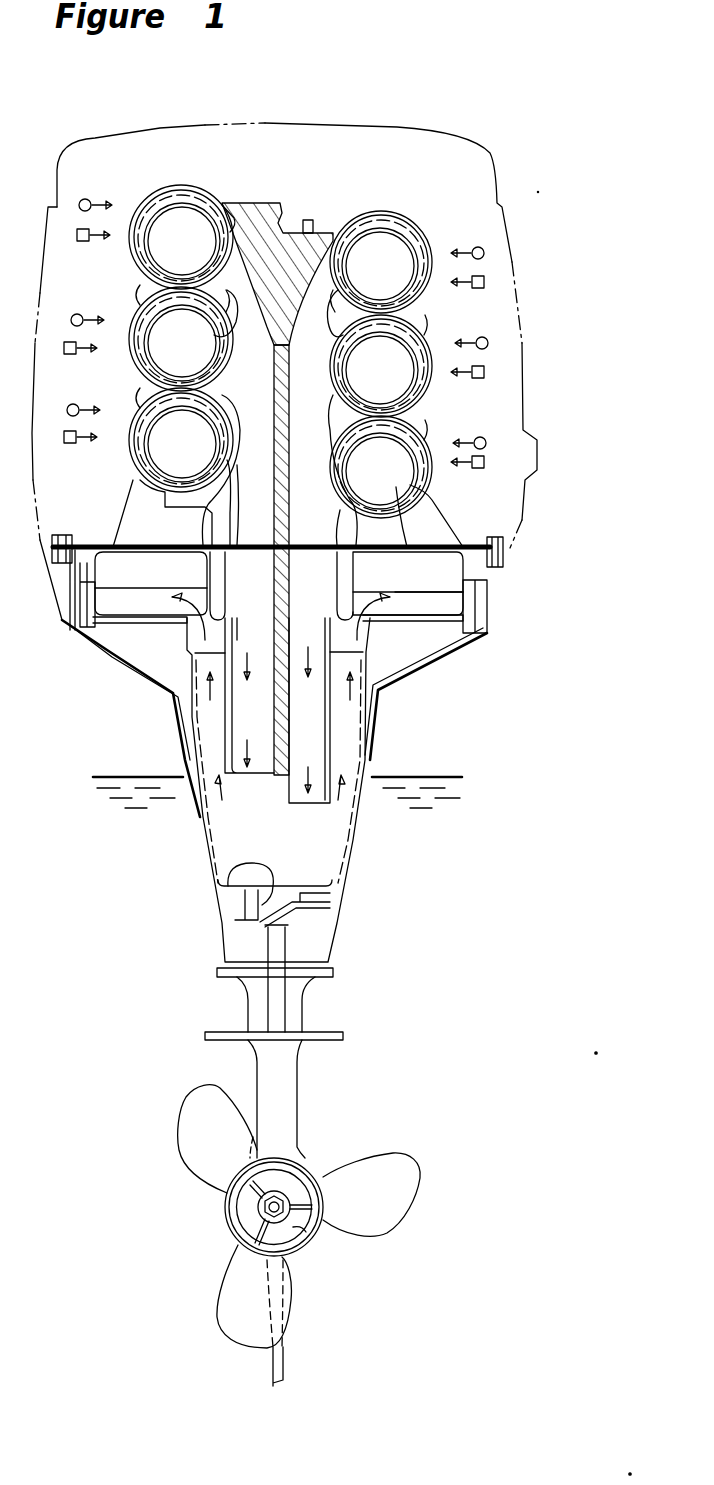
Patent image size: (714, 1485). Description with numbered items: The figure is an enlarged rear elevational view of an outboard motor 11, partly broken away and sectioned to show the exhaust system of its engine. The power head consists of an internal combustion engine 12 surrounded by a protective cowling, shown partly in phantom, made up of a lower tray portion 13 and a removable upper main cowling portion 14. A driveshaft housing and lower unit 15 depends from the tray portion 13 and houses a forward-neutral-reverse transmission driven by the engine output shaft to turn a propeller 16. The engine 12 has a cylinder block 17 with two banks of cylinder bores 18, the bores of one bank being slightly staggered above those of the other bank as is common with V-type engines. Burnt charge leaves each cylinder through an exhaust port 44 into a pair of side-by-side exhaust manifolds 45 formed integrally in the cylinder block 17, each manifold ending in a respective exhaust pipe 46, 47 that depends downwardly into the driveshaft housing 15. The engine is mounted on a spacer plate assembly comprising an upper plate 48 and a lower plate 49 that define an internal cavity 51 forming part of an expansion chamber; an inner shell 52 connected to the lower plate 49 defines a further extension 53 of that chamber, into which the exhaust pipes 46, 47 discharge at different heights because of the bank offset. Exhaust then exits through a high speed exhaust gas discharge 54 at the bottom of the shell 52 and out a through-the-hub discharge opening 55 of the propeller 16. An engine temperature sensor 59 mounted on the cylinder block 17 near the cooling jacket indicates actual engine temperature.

The outboard motor 11 is at (547, 195).
The internal combustion engine 12 is at (357, 140).
The lower tray portion 13 is at (527, 500).
The upper main cowling portion 14 is at (527, 345).
The driveshaft housing and lower unit 15 is at (353, 902).
The propeller 16 is at (306, 1235).
The cylinder block 17 is at (242, 190).
The cylinder bores 18 is at (393, 222).
The exhaust ports 44 is at (215, 239).
The exhaust manifolds 45 is at (222, 320).
The exhaust pipe 46 is at (227, 742).
The exhaust pipe 47 is at (230, 513).
The upper plate 48 is at (473, 553).
The lower plate 49 is at (427, 620).
The internal cavity 51 is at (428, 584).
The inner shell 52 is at (363, 677).
The extension of the expansion chamber 53 is at (320, 848).
The high speed exhaust gas discharge 54 is at (228, 868).
The high speed exhaust gas discharge opening 55 is at (318, 1228).
The engine temperature sensor 59 is at (316, 220).